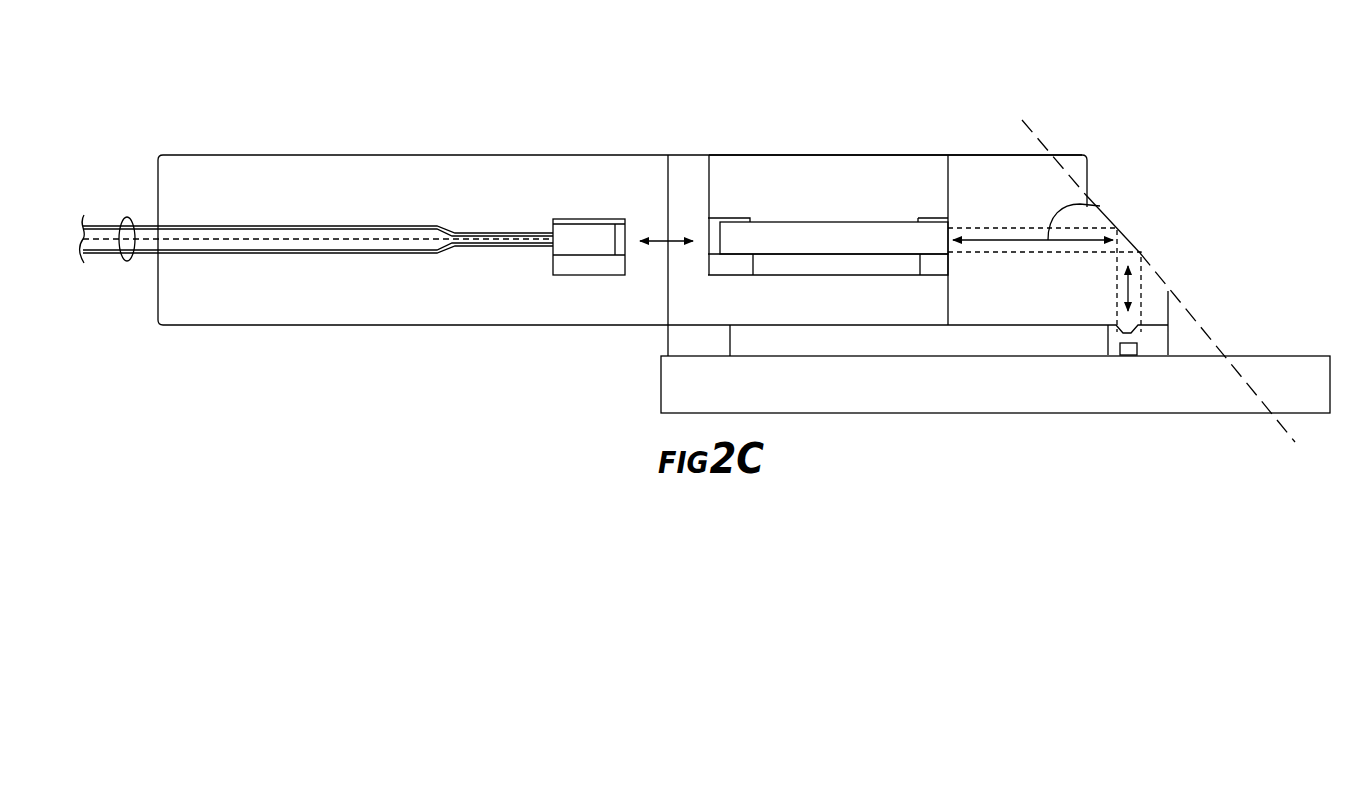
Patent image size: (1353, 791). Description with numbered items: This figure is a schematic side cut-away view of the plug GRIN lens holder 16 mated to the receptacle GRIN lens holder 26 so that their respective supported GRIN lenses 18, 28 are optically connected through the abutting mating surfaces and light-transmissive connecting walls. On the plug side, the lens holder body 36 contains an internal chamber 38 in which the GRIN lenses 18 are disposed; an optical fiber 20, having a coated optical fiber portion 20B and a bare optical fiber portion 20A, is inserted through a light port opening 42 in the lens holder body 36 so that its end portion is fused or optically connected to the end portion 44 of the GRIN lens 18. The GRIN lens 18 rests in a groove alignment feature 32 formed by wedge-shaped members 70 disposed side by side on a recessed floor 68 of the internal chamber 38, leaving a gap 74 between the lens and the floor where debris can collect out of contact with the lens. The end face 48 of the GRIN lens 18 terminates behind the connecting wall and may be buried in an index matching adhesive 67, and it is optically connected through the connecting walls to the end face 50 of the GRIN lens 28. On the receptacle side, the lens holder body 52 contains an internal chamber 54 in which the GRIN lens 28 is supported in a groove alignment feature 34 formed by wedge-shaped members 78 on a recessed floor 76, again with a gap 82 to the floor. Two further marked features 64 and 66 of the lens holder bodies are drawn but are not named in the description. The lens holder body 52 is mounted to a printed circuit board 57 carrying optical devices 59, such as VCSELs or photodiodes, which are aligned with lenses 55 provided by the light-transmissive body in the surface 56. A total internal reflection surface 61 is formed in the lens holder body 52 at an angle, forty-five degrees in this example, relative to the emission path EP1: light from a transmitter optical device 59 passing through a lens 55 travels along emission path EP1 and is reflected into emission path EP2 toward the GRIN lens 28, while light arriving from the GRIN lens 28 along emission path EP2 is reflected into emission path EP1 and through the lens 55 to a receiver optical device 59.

The GRIN lens holder 16 is at (341, 135).
The GRIN lenses 18 is at (578, 248).
The optical fibers 20 is at (127, 261).
The bare optical fiber portions 20A is at (478, 246).
The coated optical fiber portions 20B is at (265, 250).
The GRIN lens holder 26 is at (805, 134).
The GRIN lenses 28 is at (838, 222).
The groove alignment features 32 is at (600, 267).
The groove alignment features 34 is at (729, 217).
The lens holder body 36 is at (400, 158).
The internal chamber 38 is at (532, 162).
The light port openings 42 is at (151, 258).
The end portions 44 is at (549, 252).
The end faces 48 is at (713, 276).
The end faces 50 is at (628, 250).
The lens holder body 52 is at (1000, 157).
The internal chamber 54 is at (812, 175).
The lenses 55 is at (1105, 338).
The surface 56 is at (1143, 307).
The printed circuit board 57 is at (955, 414).
The optical devices 59 is at (1139, 349).
The total internal reflection surface 61 is at (1125, 237).
The housing wall 64 is at (561, 162).
The housing chamber 66 is at (902, 184).
The index matching adhesive 67 is at (639, 243).
The recessed floor 68 is at (587, 273).
The wedge-shaped members 70 is at (621, 231).
The gap 74 is at (568, 267).
The recessed floor 76 is at (826, 274).
The wedge-shaped members 78 is at (727, 216).
The gap 82 is at (786, 262).
The emission path EP1 is at (1131, 332).
The emission path EP2 is at (1096, 206).